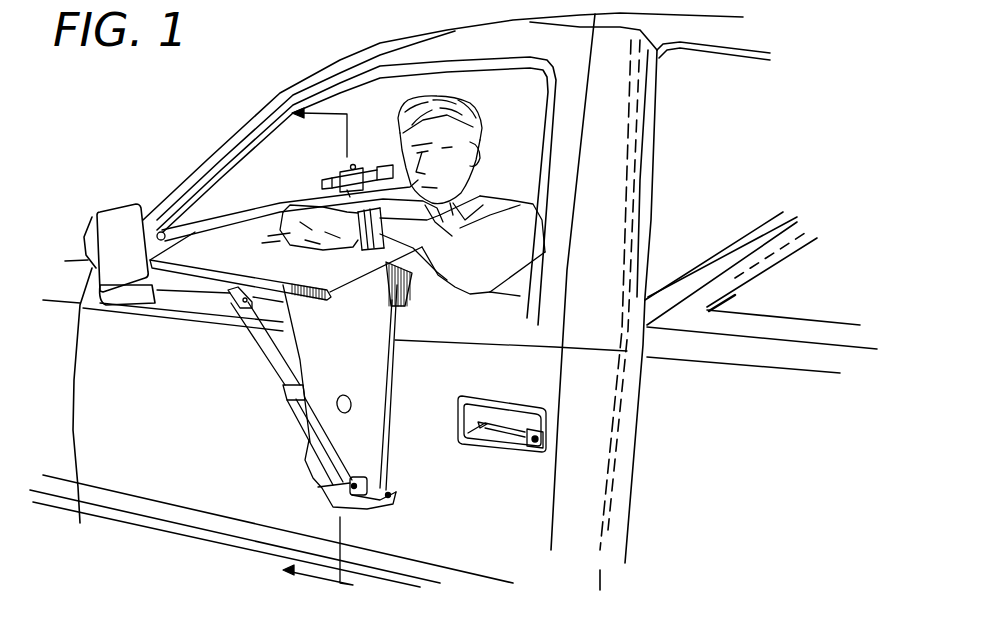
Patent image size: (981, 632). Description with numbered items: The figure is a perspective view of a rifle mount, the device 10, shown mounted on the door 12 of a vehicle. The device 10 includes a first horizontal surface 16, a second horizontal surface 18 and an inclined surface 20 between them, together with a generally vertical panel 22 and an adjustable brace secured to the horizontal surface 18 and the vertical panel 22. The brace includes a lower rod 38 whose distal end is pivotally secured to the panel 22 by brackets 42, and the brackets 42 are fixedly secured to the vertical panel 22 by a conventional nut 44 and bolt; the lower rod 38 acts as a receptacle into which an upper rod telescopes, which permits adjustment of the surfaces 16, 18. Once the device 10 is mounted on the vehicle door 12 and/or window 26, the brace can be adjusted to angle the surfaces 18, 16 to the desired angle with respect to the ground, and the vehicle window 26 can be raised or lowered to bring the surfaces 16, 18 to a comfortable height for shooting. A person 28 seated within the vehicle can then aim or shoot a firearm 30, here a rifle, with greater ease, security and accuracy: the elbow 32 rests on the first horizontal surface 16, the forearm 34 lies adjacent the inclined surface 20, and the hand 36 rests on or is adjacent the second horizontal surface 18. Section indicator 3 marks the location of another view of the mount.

The section line for FIG. 3 is at (301, 347).
The device 10 is at (282, 394).
The door 12 is at (502, 471).
The first horizontal surface 16 is at (496, 329).
The second horizontal surface 18 is at (425, 169).
The inclined surface 20 is at (286, 304).
The vertical panel 22 is at (361, 387).
The window 26 is at (355, 342).
The person 28 is at (471, 169).
The firearm 30 is at (300, 202).
The elbow 32 is at (451, 245).
The forearm 34 is at (374, 293).
The hand 36 is at (307, 241).
The lower rod 38 is at (284, 386).
The brackets 42 is at (339, 495).
The nut 44 is at (363, 498).